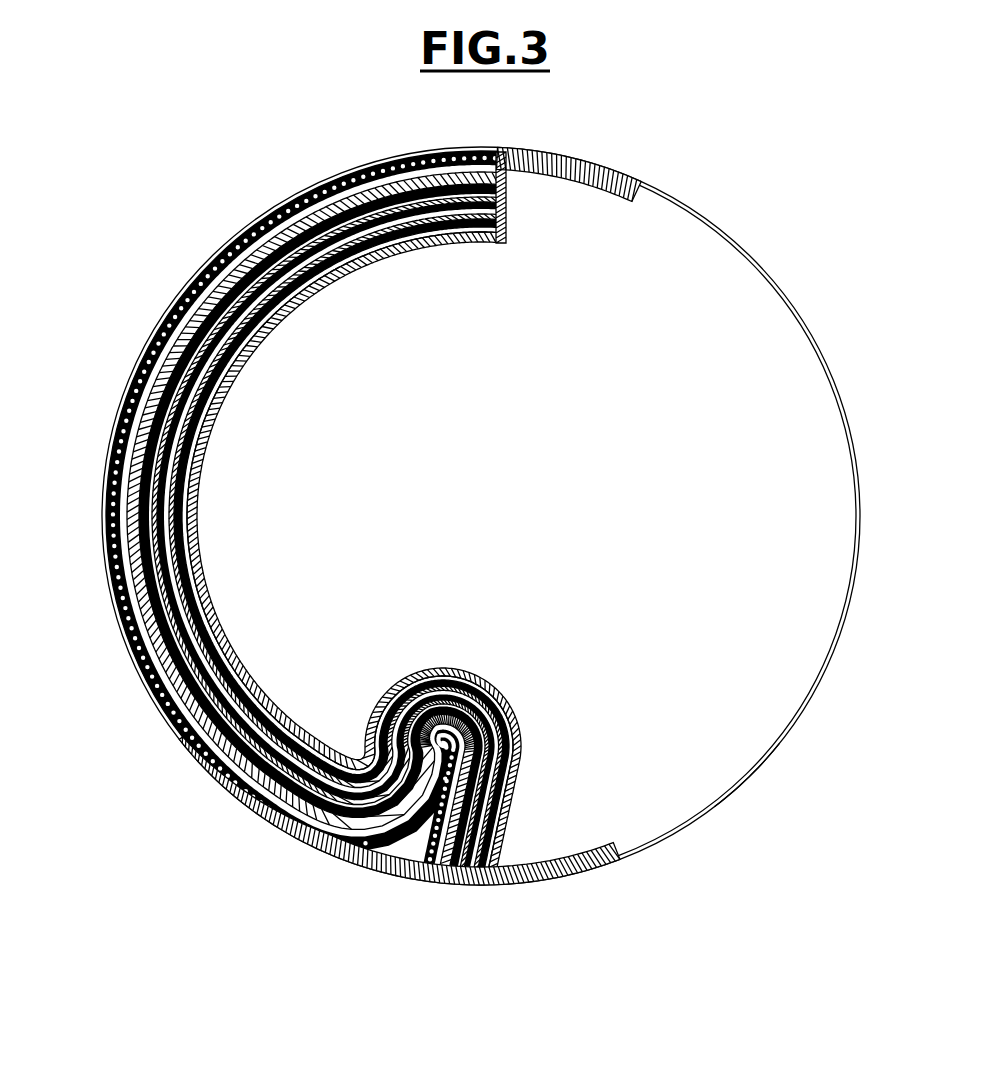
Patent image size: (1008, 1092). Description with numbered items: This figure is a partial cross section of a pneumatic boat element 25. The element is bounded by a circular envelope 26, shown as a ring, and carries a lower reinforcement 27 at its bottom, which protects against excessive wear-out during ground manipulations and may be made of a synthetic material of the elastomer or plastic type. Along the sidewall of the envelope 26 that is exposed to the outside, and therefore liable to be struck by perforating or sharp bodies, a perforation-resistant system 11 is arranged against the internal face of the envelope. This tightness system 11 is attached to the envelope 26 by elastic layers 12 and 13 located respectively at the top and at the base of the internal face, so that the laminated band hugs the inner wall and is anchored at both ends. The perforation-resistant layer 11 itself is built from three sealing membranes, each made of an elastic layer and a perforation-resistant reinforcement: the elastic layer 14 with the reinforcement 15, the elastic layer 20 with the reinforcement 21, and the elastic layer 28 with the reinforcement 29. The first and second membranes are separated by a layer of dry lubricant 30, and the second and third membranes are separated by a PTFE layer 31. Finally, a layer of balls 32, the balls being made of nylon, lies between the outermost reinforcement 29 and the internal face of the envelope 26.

The perforation-resistant system 11 is at (269, 515).
The elastic layer 12 is at (590, 178).
The elastic layer 13 is at (584, 850).
The elastic layer 14 is at (197, 522).
The perforation-resistant reinforcement 15 is at (193, 500).
The elastic layer 20 is at (190, 455).
The perforation-resistant reinforcement 21 is at (185, 432).
The pneumatic boat element 25 is at (463, 509).
The circular envelope 26 is at (504, 516).
The lower reinforcement 27 is at (757, 777).
The elastic layer 28 is at (137, 420).
The perforation-resistant reinforcement 29 is at (120, 455).
The layer of dry lubricant 30 is at (192, 478).
The PTFE layer 31 is at (178, 410).
The layer of balls 32 is at (106, 485).